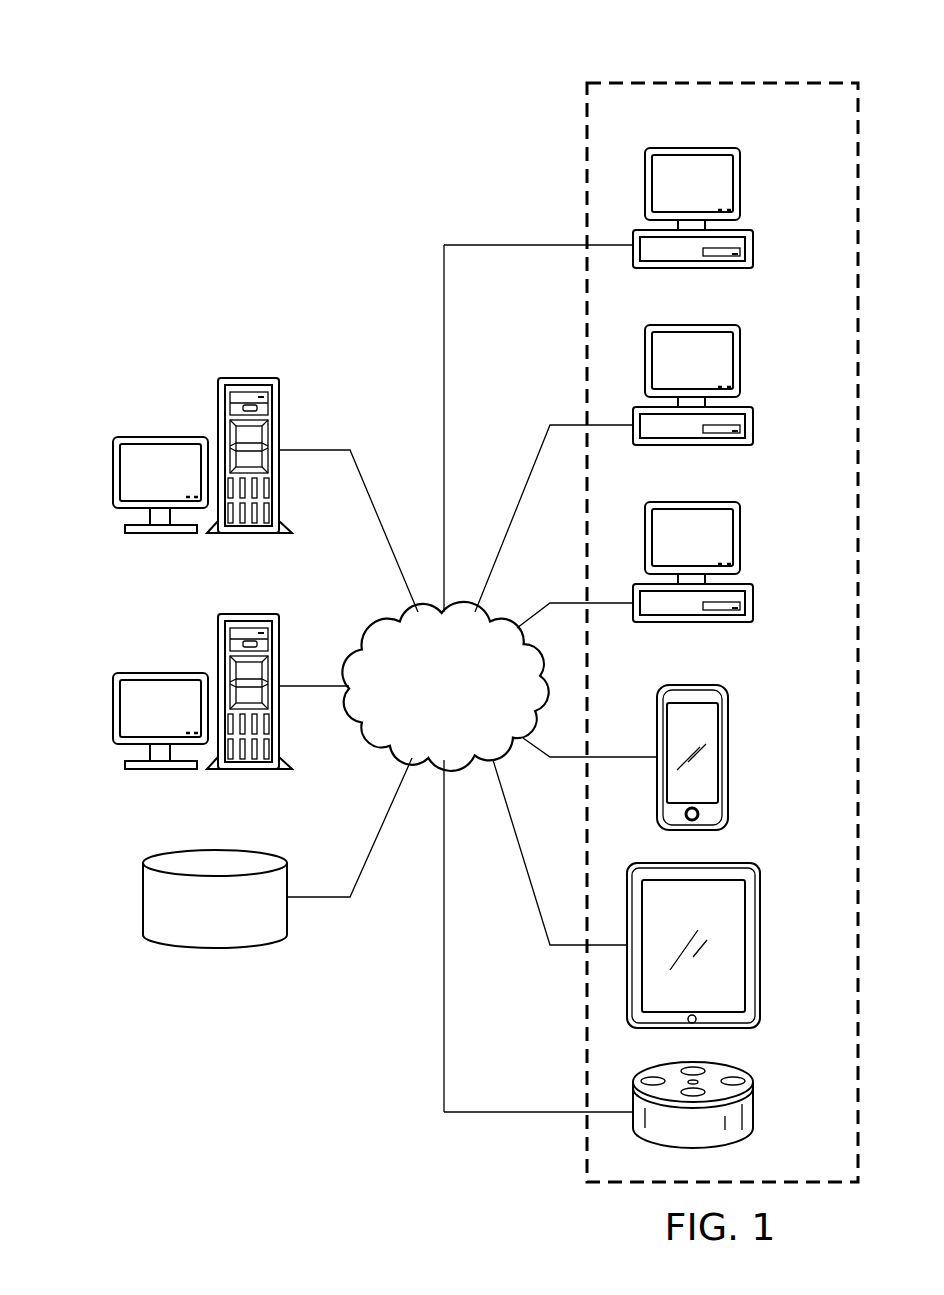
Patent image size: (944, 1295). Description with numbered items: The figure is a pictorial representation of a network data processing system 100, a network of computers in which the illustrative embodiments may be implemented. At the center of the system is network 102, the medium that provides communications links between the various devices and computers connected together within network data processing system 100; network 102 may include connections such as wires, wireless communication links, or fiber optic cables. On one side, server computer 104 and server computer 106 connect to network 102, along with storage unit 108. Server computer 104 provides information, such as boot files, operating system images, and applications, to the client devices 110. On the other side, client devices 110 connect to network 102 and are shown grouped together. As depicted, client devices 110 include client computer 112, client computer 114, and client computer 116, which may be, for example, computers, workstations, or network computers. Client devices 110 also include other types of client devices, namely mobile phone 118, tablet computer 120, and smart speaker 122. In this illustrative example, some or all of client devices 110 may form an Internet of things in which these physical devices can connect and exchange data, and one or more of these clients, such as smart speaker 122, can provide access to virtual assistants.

The network data processing system 100 is at (238, 217).
The network 102 is at (467, 720).
The server computer 104 is at (113, 472).
The server computer 106 is at (113, 708).
The storage unit 108 is at (143, 897).
The client devices 110 is at (767, 74).
The client computer 112 is at (742, 183).
The client computer 114 is at (742, 360).
The client computer 116 is at (742, 537).
The mobile phone 118 is at (728, 770).
The tablet computer 120 is at (760, 958).
The smart speaker 122 is at (755, 1122).